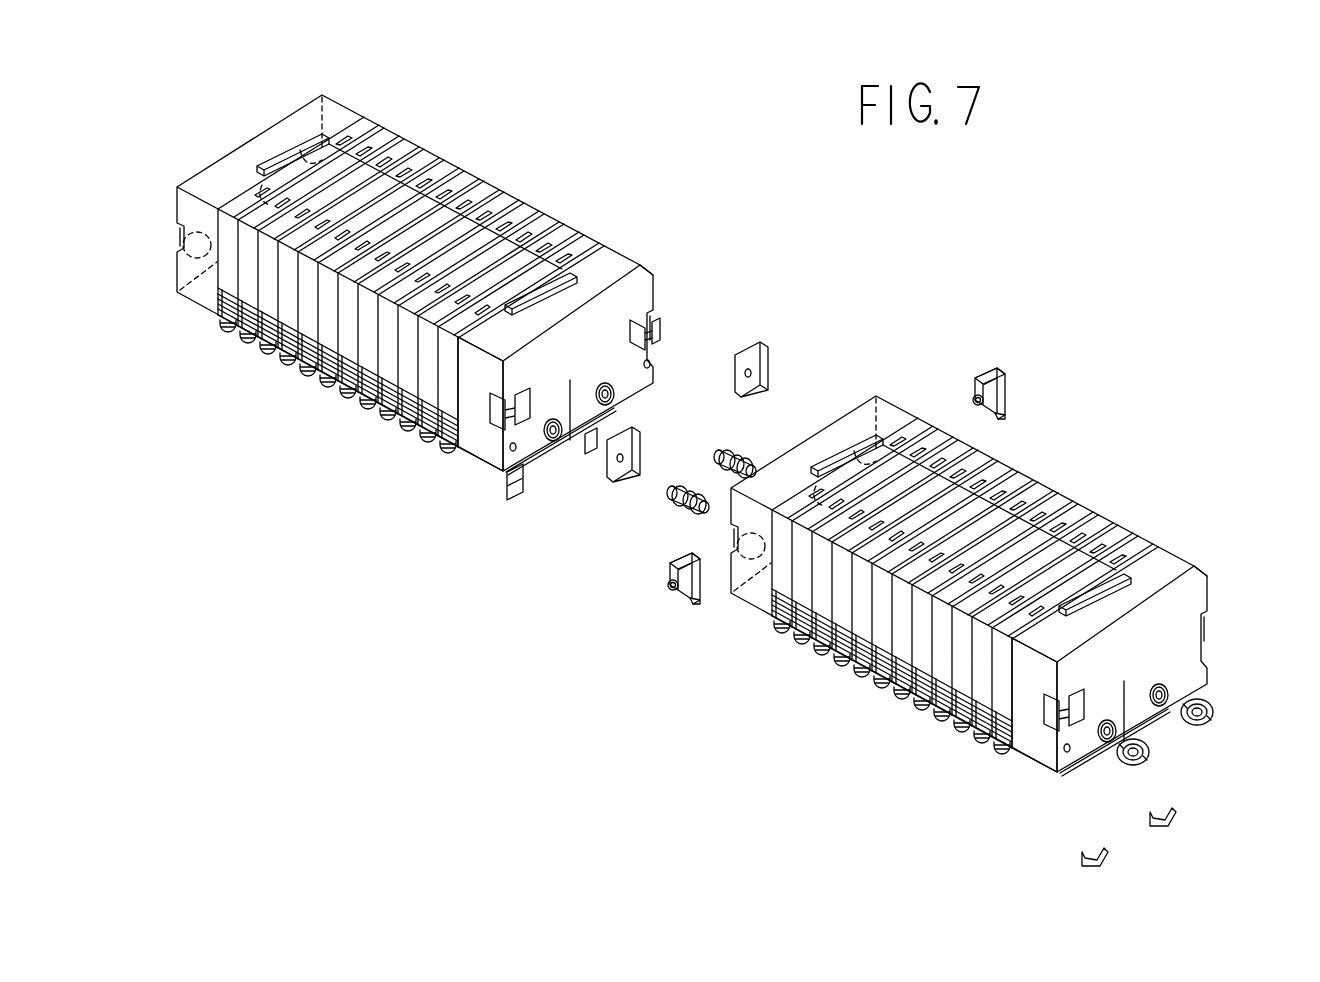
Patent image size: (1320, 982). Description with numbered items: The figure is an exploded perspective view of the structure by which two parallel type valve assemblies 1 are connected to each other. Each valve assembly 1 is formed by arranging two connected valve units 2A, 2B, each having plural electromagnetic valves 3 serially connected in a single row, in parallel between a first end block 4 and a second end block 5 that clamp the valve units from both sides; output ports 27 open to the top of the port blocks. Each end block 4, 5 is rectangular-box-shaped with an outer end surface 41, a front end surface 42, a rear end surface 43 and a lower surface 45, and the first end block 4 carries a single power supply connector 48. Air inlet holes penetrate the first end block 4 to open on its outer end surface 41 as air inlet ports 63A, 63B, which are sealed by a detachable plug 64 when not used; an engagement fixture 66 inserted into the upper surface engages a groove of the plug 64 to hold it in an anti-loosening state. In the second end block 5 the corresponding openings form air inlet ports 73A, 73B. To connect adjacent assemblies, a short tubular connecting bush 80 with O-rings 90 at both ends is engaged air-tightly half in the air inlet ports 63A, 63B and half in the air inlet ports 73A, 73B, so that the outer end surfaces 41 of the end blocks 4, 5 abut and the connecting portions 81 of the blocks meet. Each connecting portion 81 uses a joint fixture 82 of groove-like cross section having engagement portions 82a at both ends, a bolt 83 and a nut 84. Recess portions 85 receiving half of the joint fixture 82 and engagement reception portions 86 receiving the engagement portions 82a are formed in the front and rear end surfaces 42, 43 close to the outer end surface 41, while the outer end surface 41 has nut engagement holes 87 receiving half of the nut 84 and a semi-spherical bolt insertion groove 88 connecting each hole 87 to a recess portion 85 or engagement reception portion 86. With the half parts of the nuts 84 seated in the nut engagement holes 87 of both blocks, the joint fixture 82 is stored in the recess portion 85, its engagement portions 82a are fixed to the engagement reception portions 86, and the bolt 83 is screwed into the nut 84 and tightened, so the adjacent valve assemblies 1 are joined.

The valve assembly 1 is at (553, 152).
The connected valve unit 2A is at (498, 164).
The connected valve unit 2B is at (322, 387).
The electromagnetic valve 3 is at (420, 150).
The first end block 4 is at (628, 262).
The second end block 5 is at (345, 115).
The output port 27 is at (236, 340).
The outer end surface 41 is at (570, 380).
The front end surface 42 is at (463, 400).
The rear end surface 43 is at (655, 272).
The lower surface 45 is at (590, 270).
The power supply connector 48 is at (510, 490).
The air inlet port 63A is at (612, 395).
The air inlet port 63B is at (558, 460).
The plug 64 is at (1215, 712).
The engagement fixture 66 is at (1172, 815).
The air inlet port 73A is at (262, 185).
The air inlet port 73B is at (185, 215).
The connecting bush 80 is at (690, 490).
The connecting portion 81 is at (672, 304).
The joint fixture 82 is at (680, 600).
The engagement portion 82a is at (672, 565).
The bolt 83 is at (668, 585).
The nut 84 is at (632, 440).
The recess portion 85 is at (655, 342).
The engagement reception portion 86 is at (505, 480).
The nut engagement hole 87 is at (650, 364).
The bolt insertion groove 88 is at (660, 332).
The O-ring 90 is at (730, 447).